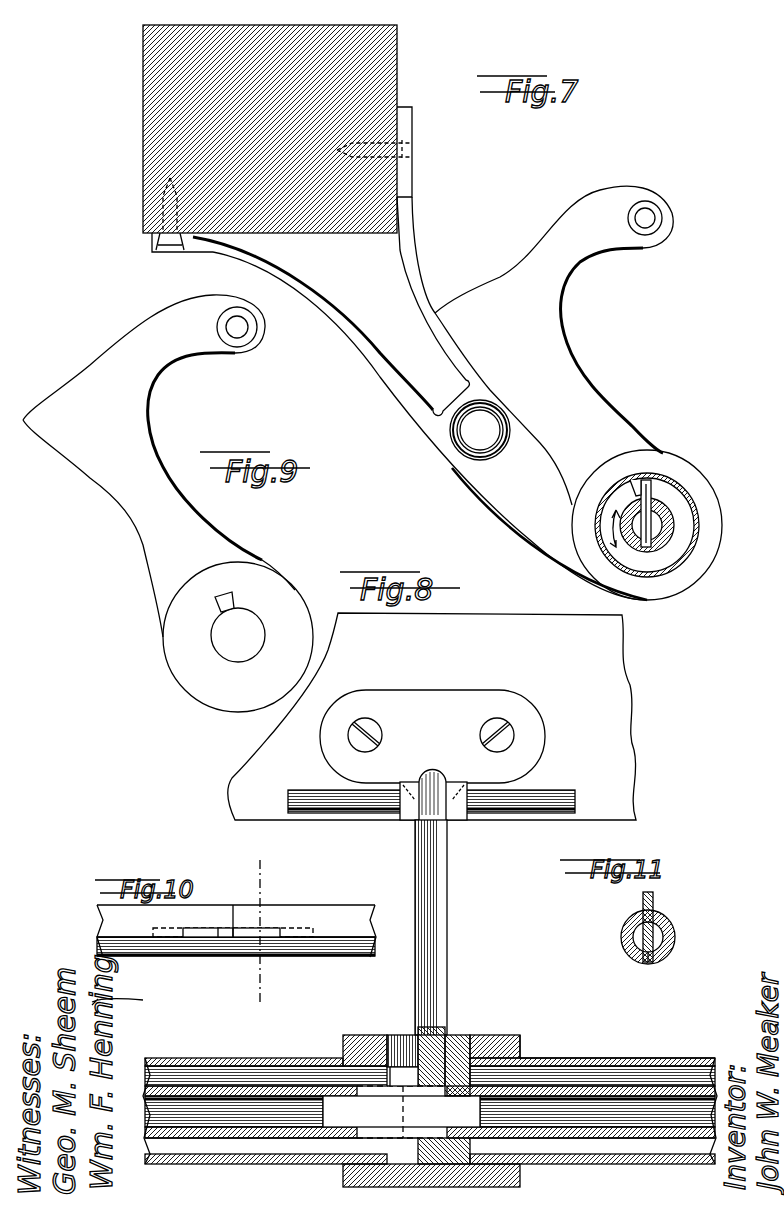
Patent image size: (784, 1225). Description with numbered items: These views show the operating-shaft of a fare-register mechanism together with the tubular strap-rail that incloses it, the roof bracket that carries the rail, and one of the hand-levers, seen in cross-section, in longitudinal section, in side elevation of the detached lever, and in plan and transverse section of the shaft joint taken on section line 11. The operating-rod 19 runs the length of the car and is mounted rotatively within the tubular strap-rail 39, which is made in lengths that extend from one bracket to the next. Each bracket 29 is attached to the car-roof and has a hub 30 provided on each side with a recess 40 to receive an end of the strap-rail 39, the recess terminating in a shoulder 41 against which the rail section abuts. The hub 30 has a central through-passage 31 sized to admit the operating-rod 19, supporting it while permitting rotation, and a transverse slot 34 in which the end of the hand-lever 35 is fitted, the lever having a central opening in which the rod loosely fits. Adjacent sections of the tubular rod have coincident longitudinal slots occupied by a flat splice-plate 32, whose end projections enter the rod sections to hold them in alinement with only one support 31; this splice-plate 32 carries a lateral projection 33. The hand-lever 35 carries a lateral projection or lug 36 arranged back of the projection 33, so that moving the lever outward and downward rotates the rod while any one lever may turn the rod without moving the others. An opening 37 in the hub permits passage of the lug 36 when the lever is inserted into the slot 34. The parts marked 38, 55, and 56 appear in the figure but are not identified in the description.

In FIG. 10, the section line 11 is at (262, 931).
In FIG. 7, the operating-rod 19 is at (667, 532).
In FIG. 8, the operating-rod 19 is at (618, 1080).
In FIG. 10, the operating-rod 19 is at (308, 913).
In FIG. 11, the operating-rod 19 is at (676, 937).
In FIG. 7, the bracket 29 is at (486, 449).
In FIG. 8, the bracket 29 is at (437, 712).
In FIG. 8, the hub 30 is at (495, 1037).
In FIG. 8, the central through-passage 31 is at (455, 1085).
In FIG. 8, the splice-plate 32 is at (401, 1112).
In FIG. 10, the splice-plate 32 is at (193, 930).
In FIG. 11, the splice-plate 32 is at (650, 962).
In FIG. 8, the projection 33 is at (397, 1077).
In FIG. 10, the projection 33 is at (237, 932).
In FIG. 11, the projection 33 is at (655, 900).
In FIG. 8, the transverse slot 34 is at (445, 1162).
In FIG. 7, the hand-lever 35 is at (457, 393).
In FIG. 9, the hand-lever 35 is at (168, 503).
In FIG. 8, the hand-lever 35 is at (436, 957).
In FIG. 9, the lateral projection 36 is at (232, 600).
In FIG. 8, the opening 37 is at (407, 1050).
In FIG. 7, the pin bar 38 is at (656, 218).
In FIG. 9, the pin bar 38 is at (237, 330).
In FIG. 8, the pin bar 38 is at (545, 798).
In FIG. 7, the strap-rail 39 is at (693, 507).
In FIG. 8, the strap-rail 39 is at (570, 1068).
In FIG. 8, the recess 40 is at (522, 1056).
In FIG. 8, the shoulder 41 is at (383, 1058).
In FIG. 7, the key 55 is at (652, 493).
In FIG. 7, the keyway 56 is at (642, 482).